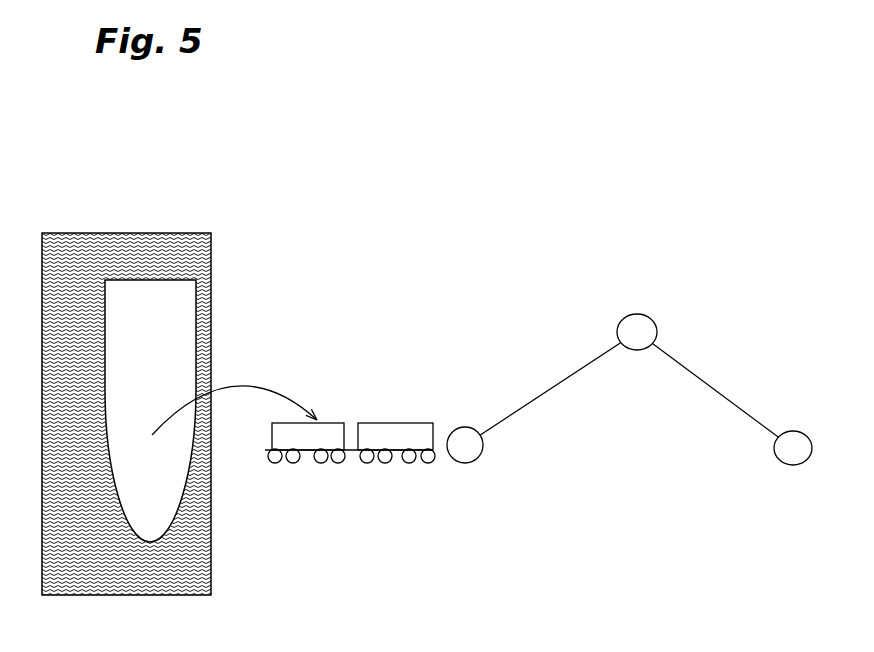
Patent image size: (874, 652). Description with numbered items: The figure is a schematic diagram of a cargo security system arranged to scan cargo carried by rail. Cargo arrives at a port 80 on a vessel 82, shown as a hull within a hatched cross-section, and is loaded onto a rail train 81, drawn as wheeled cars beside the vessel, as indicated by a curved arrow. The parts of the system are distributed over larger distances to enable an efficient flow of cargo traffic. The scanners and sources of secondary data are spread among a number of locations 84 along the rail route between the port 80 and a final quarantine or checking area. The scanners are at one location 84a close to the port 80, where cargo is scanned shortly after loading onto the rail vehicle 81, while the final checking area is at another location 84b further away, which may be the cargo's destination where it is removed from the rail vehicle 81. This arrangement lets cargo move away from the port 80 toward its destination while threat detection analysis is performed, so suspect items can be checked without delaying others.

The port 80 is at (179, 377).
The rail train 81 is at (310, 442).
The vessel 82 is at (133, 298).
The locations 84 is at (633, 436).
The location close to the port 84a is at (461, 427).
The location further away from the port 84b is at (799, 431).